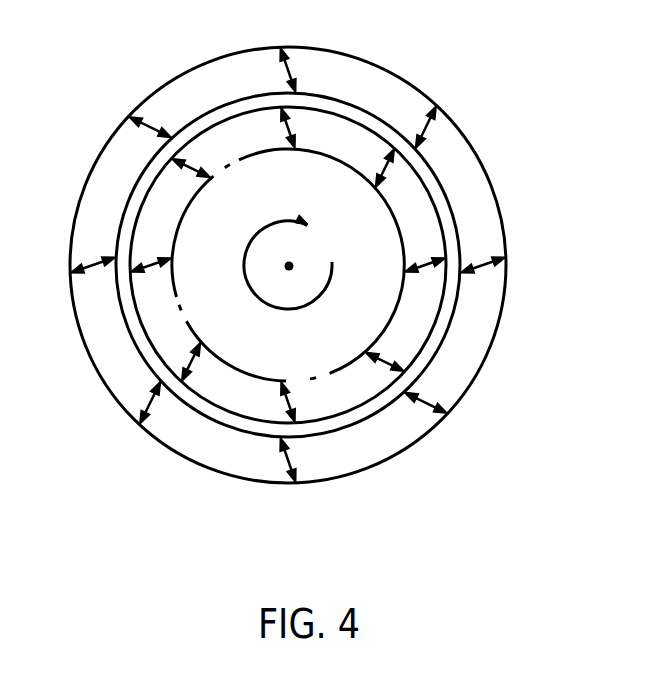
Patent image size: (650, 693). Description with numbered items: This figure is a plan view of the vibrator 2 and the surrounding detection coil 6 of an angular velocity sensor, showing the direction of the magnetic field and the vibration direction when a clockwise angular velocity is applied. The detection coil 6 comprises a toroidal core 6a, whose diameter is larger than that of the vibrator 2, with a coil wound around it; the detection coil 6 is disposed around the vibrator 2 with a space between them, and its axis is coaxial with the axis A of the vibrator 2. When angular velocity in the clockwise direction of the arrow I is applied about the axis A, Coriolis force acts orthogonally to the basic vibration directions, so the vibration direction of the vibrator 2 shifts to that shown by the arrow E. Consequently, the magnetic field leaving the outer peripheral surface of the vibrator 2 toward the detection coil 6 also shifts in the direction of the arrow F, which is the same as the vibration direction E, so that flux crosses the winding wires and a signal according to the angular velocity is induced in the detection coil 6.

The toroidal core 6a is at (412, 93).
The detection coil 6 is at (483, 167).
The vibrator 2 is at (393, 242).
The vibration direction E is at (280, 115).
The direction of the magnetic field F is at (293, 83).
The clockwise direction I is at (262, 230).
The axis A is at (301, 253).